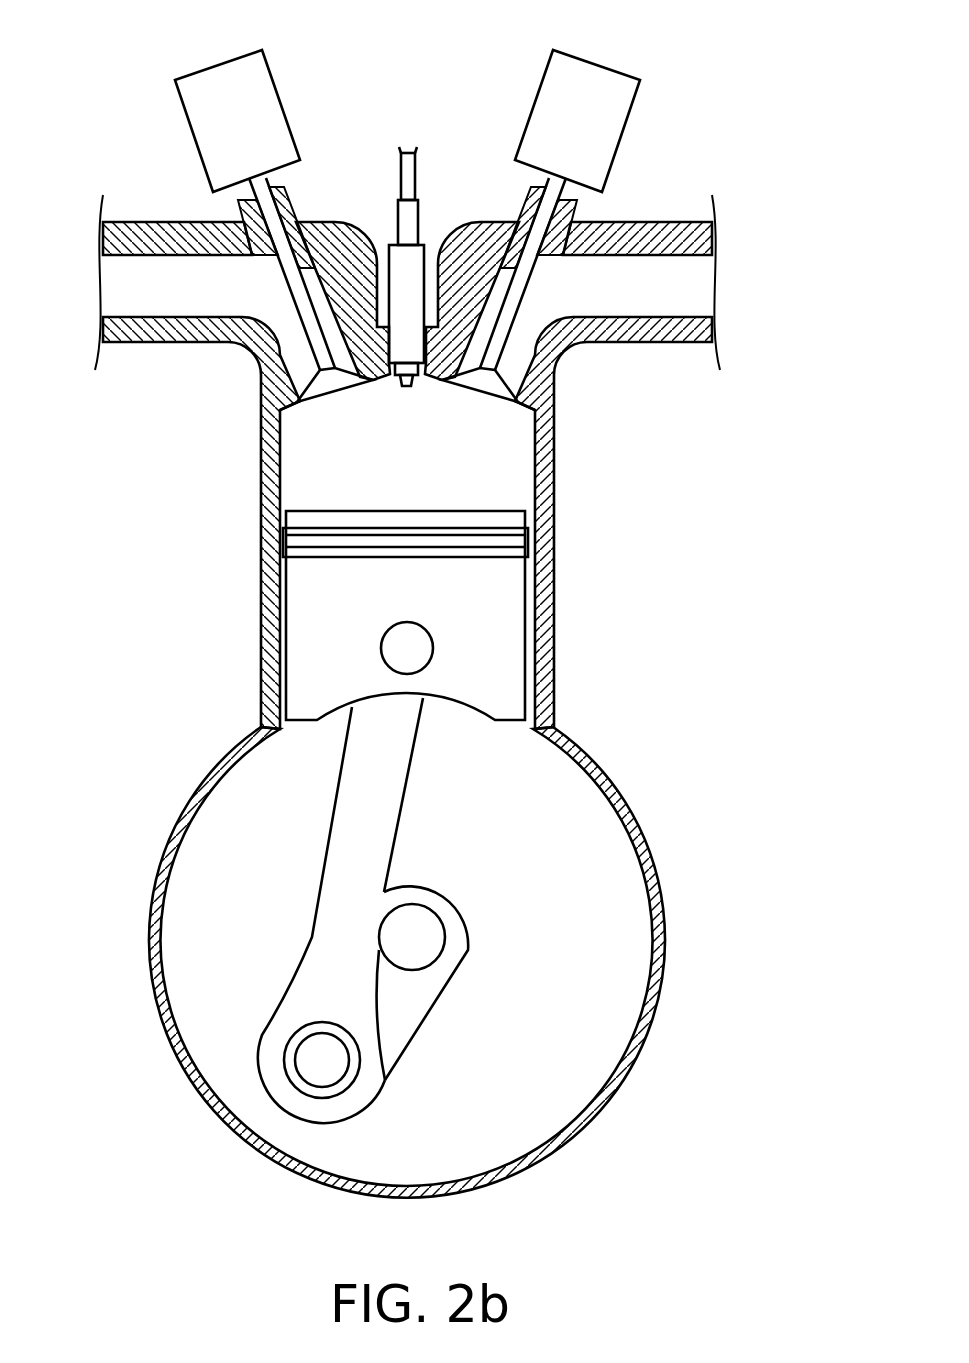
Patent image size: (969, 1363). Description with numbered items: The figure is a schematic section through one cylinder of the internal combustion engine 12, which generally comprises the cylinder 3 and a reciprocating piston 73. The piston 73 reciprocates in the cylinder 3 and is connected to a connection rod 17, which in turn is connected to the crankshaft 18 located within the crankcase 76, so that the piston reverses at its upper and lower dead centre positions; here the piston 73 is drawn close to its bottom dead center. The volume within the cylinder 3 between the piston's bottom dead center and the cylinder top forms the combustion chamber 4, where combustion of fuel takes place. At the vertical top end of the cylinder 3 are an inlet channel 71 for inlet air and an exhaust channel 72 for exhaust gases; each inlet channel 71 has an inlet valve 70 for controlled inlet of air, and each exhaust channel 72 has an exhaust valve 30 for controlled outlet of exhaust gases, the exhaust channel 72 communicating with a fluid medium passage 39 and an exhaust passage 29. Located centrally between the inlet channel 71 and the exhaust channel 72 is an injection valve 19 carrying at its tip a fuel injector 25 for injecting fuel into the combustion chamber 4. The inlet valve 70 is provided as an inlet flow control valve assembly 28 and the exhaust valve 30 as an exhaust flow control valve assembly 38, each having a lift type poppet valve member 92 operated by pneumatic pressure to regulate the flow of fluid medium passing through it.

The cylinder 3 is at (228, 566).
The combustion chamber 4 is at (373, 453).
The engine 12 is at (407, 523).
The connection rod 17 is at (357, 823).
The crankshaft 18 is at (415, 940).
The injection valve 19 is at (499, 244).
The fuel injector 25 is at (408, 386).
The inlet flow control valve assembly 28 is at (472, 228).
The exhaust passage 29 is at (680, 256).
The exhaust valve 30 is at (412, 226).
The exhaust flow control valve assembly 38 is at (335, 385).
The fluid medium passage 39 is at (138, 256).
The inlet valve 70 is at (407, 190).
The inlet channel 71 is at (673, 221).
The exhaust channel 72 is at (127, 221).
The piston 73 is at (453, 510).
The crankcase 76 is at (667, 928).
The valve member 92 is at (300, 305).